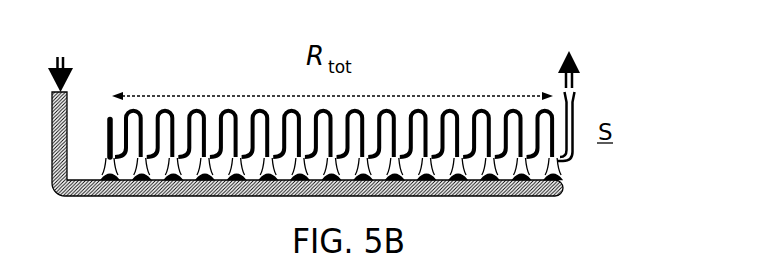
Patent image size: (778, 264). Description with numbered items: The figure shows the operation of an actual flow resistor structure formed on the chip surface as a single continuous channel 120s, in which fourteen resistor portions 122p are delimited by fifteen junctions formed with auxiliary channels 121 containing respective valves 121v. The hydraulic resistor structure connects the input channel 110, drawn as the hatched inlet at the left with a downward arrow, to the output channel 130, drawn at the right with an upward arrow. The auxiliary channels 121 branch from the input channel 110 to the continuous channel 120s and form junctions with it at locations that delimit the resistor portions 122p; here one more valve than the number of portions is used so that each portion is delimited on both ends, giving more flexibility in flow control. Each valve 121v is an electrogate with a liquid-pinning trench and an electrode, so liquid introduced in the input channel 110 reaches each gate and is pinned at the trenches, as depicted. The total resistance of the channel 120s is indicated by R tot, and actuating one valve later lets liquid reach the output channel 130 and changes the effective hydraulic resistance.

The input channel 110 is at (143, 199).
The auxiliary channel 121 is at (562, 168).
The actuatable valve 121v is at (228, 199).
The resistor portion 122p is at (204, 110).
The continuous channel 120s is at (402, 96).
The output channel 130 is at (578, 98).